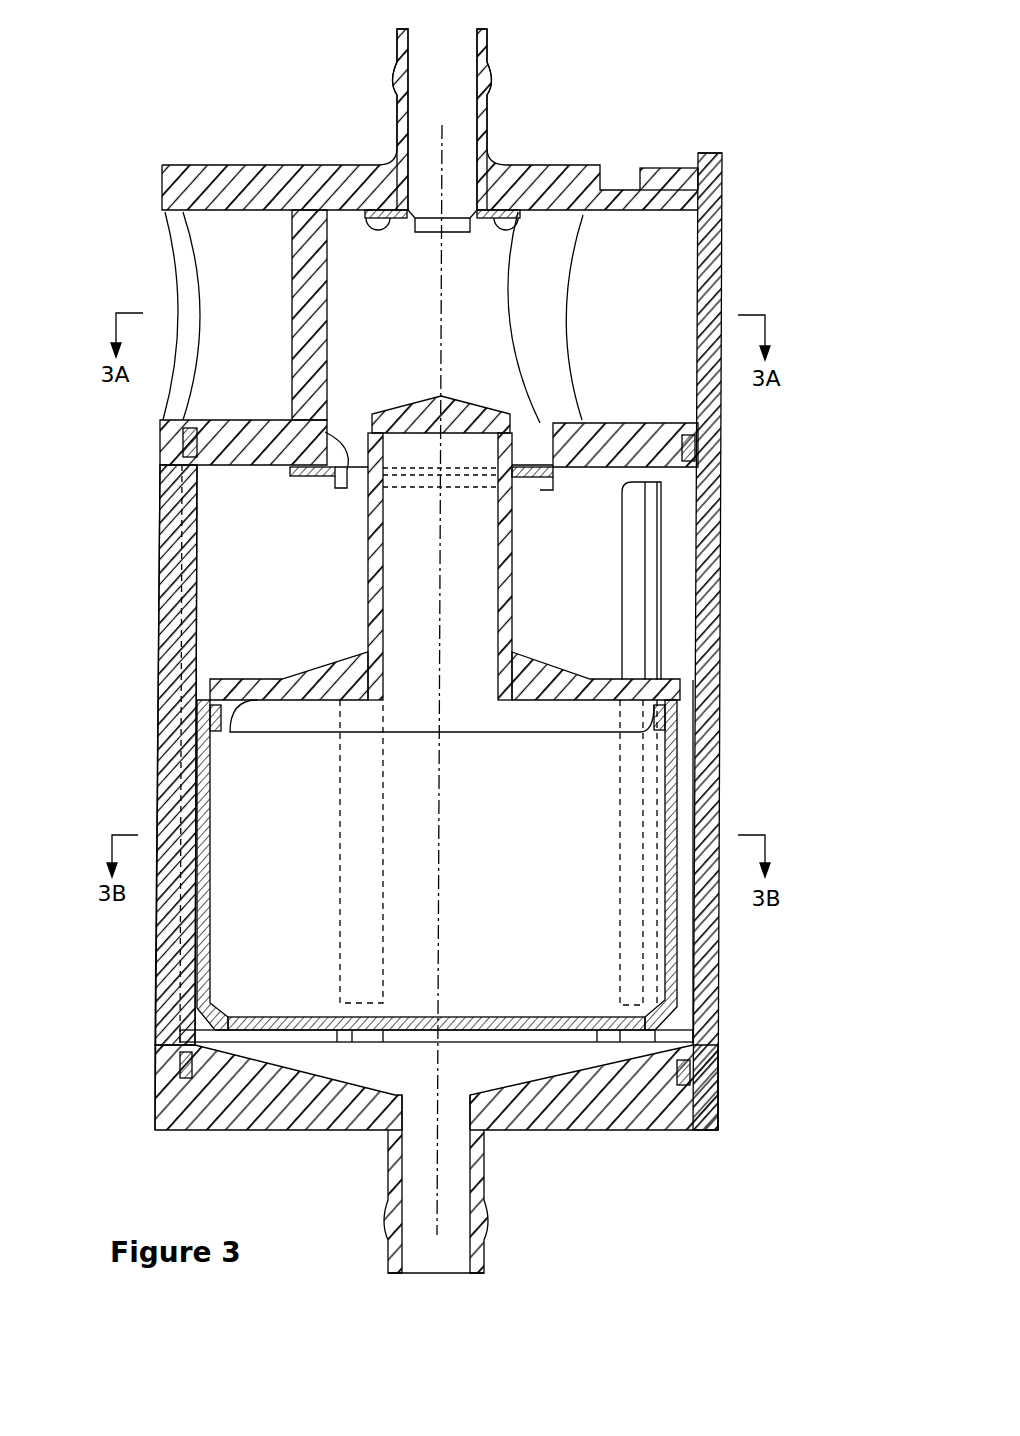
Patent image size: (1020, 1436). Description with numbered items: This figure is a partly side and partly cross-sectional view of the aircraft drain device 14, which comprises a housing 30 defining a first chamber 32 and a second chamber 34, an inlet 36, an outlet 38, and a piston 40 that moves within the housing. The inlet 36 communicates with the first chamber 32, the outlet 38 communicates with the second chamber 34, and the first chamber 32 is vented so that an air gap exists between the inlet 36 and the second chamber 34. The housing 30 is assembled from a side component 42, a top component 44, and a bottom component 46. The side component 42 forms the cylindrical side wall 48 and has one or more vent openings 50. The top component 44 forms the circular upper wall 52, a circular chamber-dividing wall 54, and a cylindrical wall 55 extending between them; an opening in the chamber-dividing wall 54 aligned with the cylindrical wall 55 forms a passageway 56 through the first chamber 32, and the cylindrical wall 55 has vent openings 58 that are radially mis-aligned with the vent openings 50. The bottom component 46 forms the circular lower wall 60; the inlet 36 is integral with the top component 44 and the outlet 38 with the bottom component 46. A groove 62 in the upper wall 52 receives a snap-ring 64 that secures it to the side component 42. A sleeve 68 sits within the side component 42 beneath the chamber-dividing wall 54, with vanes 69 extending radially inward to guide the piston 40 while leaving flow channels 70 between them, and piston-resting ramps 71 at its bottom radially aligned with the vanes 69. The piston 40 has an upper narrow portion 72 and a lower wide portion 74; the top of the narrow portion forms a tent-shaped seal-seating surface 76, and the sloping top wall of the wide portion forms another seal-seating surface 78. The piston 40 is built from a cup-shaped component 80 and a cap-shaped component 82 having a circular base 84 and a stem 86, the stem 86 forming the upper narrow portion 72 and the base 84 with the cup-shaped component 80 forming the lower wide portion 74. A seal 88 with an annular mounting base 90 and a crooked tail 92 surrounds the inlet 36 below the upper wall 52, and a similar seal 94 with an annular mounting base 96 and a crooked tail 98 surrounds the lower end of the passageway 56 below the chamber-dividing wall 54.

The aircraft drain device 14 is at (760, 228).
The housing 30 is at (150, 1003).
The first chamber 32 is at (415, 327).
The second chamber 34 is at (250, 597).
The inlet 36 is at (489, 56).
The outlet 38 is at (486, 1208).
The piston 40 is at (437, 852).
The side component 42 is at (160, 532).
The top component 44 is at (572, 176).
The bottom component 46 is at (612, 1132).
The cylindrical side wall 48 is at (158, 615).
The vent opening 50 is at (188, 270).
The circular upper wall 52 is at (311, 192).
The chamber-dividing wall 54 is at (253, 440).
The cylindrical wall 55 is at (312, 283).
The passageway 56 is at (345, 488).
The vent opening 58 is at (537, 270).
The circular lower wall 60 is at (248, 1130).
The groove 62 is at (668, 185).
The snap-ring 64 is at (676, 168).
The sleeve 68 is at (700, 933).
The vane 69 is at (202, 805).
The flow channel 70 is at (720, 988).
The piston-resting ramp 71 is at (212, 1037).
The upper narrow portion 72 is at (512, 574).
The lower wide portion 74 is at (195, 925).
The seal-seating surface 76 is at (421, 397).
The seal-seating surface 78 is at (332, 672).
The cup-shaped component 80 is at (700, 822).
The cap-shaped component 82 is at (692, 665).
The circular base 84 is at (587, 676).
The stem 86 is at (508, 510).
The seal 88 is at (522, 212).
The annular mounting base 90 is at (358, 163).
The crooked tail 92 is at (440, 200).
The seal 94 is at (556, 472).
The annular mounting base 96 is at (548, 468).
The crooked tail 98 is at (540, 400).